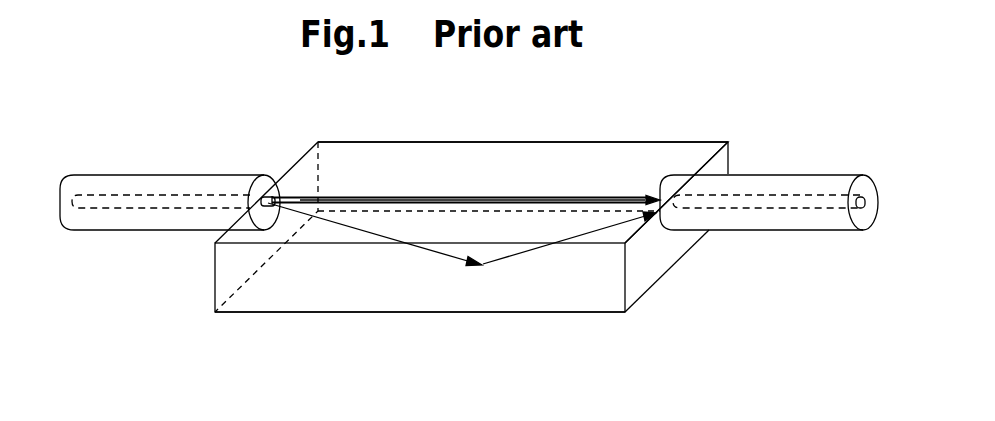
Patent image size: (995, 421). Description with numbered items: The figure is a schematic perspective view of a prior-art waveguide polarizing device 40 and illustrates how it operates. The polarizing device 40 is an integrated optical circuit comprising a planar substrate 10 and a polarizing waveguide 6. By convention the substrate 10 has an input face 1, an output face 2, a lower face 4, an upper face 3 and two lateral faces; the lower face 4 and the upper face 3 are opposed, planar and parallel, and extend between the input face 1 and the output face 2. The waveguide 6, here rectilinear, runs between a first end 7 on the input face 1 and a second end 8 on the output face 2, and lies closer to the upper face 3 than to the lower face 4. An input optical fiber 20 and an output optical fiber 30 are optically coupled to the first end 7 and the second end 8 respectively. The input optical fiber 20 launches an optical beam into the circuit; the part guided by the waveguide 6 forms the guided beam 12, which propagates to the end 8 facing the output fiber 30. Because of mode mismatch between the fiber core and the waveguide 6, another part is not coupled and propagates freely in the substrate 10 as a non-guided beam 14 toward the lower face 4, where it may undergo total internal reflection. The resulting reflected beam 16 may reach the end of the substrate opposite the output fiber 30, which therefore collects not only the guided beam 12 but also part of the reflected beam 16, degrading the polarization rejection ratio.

The input face 1 is at (233, 273).
The output face 2 is at (722, 160).
The upper face 3 is at (423, 160).
The lower face 4 is at (568, 298).
The polarizing waveguide 6 is at (353, 197).
The first end 7 is at (268, 200).
The second end 8 is at (673, 199).
The planar substrate 10 is at (698, 142).
The guided beam 12 is at (557, 200).
The non-guided beam 14 is at (338, 228).
The reflected beam 16 is at (640, 214).
The input optical fiber 20 is at (168, 175).
The output optical fiber 30 is at (795, 183).
The polarizing device 40 is at (180, 246).